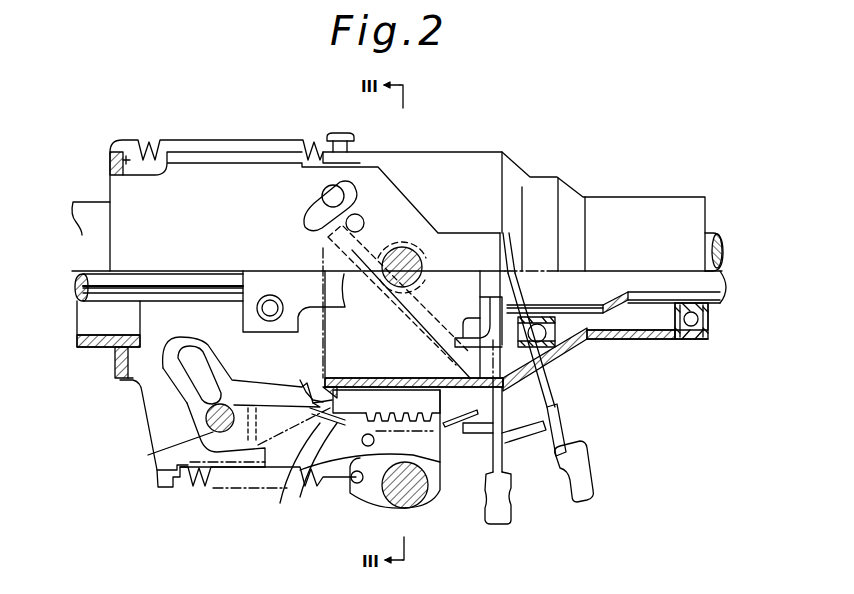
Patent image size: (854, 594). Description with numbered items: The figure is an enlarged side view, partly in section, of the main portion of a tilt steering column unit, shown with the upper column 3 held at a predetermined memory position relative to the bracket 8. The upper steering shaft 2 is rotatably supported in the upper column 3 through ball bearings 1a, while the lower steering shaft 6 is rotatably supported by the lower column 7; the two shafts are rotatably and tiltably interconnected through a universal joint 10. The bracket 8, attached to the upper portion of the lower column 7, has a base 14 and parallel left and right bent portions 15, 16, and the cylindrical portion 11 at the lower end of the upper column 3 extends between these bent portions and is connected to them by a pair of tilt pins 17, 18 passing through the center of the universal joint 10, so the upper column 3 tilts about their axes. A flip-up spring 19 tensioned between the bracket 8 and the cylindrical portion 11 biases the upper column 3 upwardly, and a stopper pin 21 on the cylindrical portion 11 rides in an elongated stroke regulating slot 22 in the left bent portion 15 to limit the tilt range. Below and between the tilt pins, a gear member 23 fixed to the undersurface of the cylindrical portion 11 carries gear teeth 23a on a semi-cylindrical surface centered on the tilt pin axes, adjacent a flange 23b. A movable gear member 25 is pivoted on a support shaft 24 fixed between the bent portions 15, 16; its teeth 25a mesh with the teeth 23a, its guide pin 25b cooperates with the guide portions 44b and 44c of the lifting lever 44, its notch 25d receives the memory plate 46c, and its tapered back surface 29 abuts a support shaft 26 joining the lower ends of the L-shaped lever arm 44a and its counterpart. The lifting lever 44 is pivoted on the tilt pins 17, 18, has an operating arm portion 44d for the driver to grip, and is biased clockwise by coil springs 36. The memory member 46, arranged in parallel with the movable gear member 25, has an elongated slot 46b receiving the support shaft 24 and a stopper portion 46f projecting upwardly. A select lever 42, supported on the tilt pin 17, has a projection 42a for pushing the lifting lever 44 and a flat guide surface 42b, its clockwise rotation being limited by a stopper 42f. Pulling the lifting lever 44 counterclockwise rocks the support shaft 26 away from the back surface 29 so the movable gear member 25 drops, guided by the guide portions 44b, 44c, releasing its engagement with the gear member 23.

The ball bearings 1a is at (689, 327).
The upper steering shaft 2 is at (713, 235).
The upper column 3 is at (637, 210).
The lower steering shaft 6 is at (168, 282).
The lower column 7 is at (94, 346).
The bracket 8 is at (122, 200).
The universal joint 10 is at (286, 276).
The cylindrical portion 11 is at (472, 163).
The base 14 is at (124, 380).
The left bent portion 15 is at (155, 432).
The right bent portion 16 is at (248, 180).
The tilt pin 17 is at (408, 262).
The tilt pin 18 is at (393, 290).
The flip-up spring 19 is at (183, 139).
The stopper pin 21 is at (330, 193).
The stroke regulating slot 22 is at (310, 218).
The gear member 23 is at (331, 384).
The gear teeth 23a is at (390, 424).
The plate flange 23b is at (298, 380).
The support shaft 24 is at (148, 455).
The movable gear member 25 is at (293, 492).
The teeth 25a is at (375, 441).
The guide pin 25b is at (373, 405).
The notch 25d is at (313, 490).
The support shaft 26 is at (398, 495).
The tapered back surface 29 is at (438, 500).
The coil springs 36 is at (228, 485).
The select lever 42 is at (510, 510).
The projection 42a is at (531, 432).
The flat guide surface 42b is at (475, 434).
The stopper 42f is at (363, 215).
The lifting lever 44 is at (583, 498).
The lever arm 44a is at (470, 246).
The guide portion 44b is at (438, 468).
The guide portion 44c is at (356, 483).
The operating arm portion 44d is at (581, 441).
The memory member 46 is at (216, 378).
The elongated slot 46b is at (188, 366).
The memory plate 46c is at (276, 455).
The stopper portion 46f is at (300, 384).